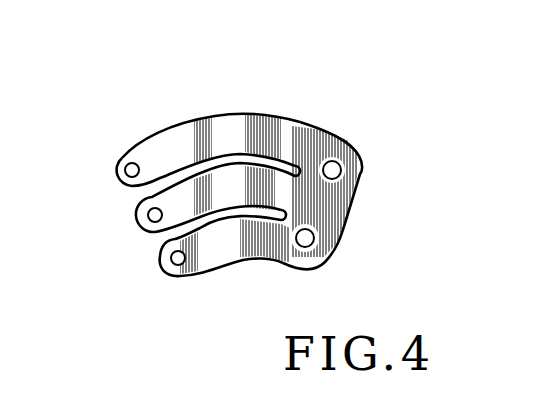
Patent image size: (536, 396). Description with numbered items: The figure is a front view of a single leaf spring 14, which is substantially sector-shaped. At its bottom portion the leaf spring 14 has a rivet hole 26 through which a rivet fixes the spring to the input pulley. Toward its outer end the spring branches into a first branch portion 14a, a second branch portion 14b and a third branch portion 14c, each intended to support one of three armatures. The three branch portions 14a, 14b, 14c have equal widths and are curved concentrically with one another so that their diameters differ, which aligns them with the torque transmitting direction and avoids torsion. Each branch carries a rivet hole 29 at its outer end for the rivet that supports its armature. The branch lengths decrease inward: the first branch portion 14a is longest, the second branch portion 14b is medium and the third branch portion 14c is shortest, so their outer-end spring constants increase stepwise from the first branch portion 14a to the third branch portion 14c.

The leaf spring 14 is at (223, 180).
The first branch portion 14a is at (215, 118).
The second branch portion 14b is at (203, 228).
The third branch portion 14c is at (245, 260).
The rivet holes 29 is at (125, 170).
The rivet hole 26 is at (314, 239).